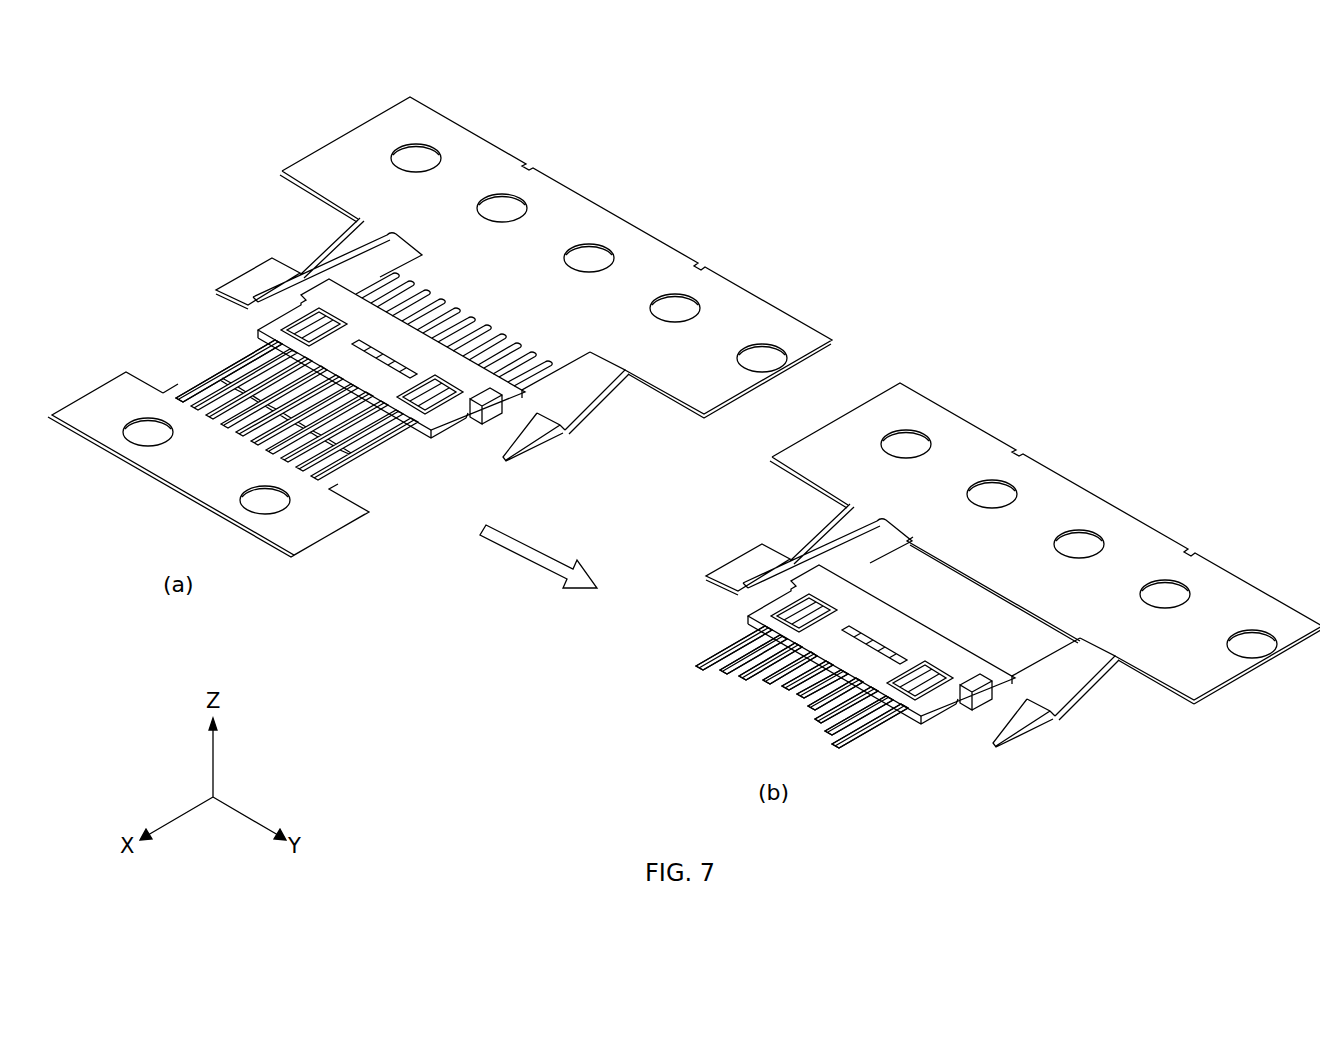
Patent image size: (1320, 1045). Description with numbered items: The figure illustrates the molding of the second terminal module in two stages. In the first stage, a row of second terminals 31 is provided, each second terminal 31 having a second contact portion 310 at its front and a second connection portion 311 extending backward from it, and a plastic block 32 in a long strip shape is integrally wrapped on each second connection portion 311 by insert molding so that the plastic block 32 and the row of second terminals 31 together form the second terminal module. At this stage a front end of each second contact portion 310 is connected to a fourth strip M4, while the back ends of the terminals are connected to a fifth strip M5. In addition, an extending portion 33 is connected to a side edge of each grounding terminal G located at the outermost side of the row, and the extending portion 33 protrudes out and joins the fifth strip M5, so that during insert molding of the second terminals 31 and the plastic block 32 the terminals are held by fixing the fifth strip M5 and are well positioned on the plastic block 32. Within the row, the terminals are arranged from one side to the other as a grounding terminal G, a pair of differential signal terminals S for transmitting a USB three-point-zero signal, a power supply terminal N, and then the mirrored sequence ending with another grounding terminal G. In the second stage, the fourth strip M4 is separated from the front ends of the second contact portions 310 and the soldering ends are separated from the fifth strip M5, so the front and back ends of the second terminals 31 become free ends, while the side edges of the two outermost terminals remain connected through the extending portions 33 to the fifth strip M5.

The fifth strip M5 is at (770, 325).
The fourth strip M4 is at (308, 531).
The plastic block 32 is at (343, 293).
The extending portion 33 is at (248, 296).
The second terminal 31 is at (218, 368).
The second connection portion 311 is at (262, 338).
The second contact portion 310 is at (382, 455).
The grounding terminal G is at (193, 375).
The differential signal terminal S is at (718, 676).
The power supply terminal N is at (740, 696).